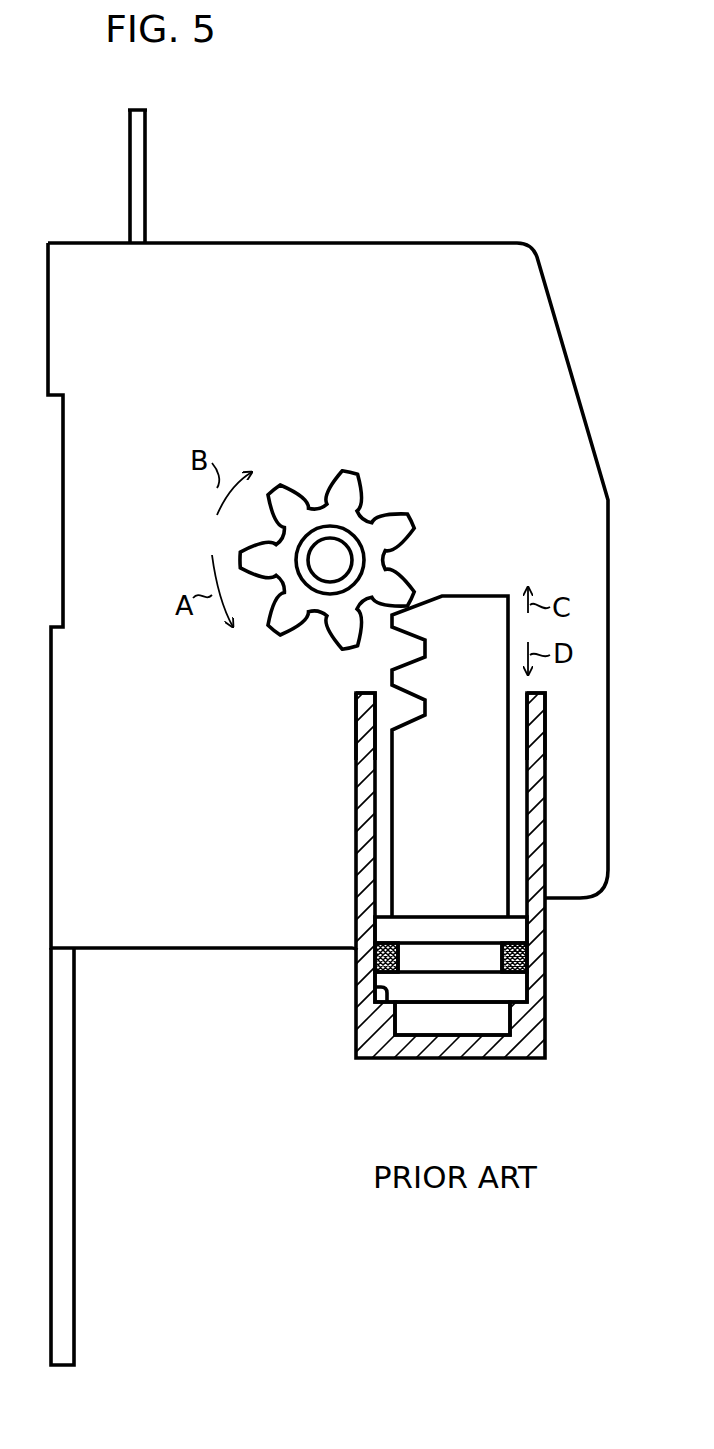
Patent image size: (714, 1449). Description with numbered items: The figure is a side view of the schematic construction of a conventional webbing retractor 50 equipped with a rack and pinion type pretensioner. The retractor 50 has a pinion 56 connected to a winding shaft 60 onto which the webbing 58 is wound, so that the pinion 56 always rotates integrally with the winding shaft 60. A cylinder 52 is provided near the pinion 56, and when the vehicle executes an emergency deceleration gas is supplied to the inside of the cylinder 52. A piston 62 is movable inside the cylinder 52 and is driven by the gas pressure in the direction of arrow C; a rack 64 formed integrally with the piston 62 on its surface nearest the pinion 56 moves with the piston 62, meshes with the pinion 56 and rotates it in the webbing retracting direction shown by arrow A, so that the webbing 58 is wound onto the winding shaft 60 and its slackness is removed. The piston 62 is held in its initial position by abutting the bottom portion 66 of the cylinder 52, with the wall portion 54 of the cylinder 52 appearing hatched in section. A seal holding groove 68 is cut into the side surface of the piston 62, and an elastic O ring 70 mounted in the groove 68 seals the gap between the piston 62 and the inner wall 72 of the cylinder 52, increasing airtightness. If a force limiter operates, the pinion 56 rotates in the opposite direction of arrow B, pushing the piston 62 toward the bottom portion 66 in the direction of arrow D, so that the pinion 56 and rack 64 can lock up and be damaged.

The webbing retractor 50 is at (313, 106).
The cylinder 52 is at (362, 832).
The left wall of cup 54 is at (360, 710).
The pinion 56 is at (345, 500).
The webbing 58 is at (145, 165).
The winding shaft 60 is at (335, 557).
The piston 62 is at (513, 990).
The rack 64 is at (477, 620).
The bottom portion 66 is at (375, 988).
The seal holding groove 68 is at (452, 958).
The O ring 70 is at (375, 962).
The inner wall 72 is at (528, 803).